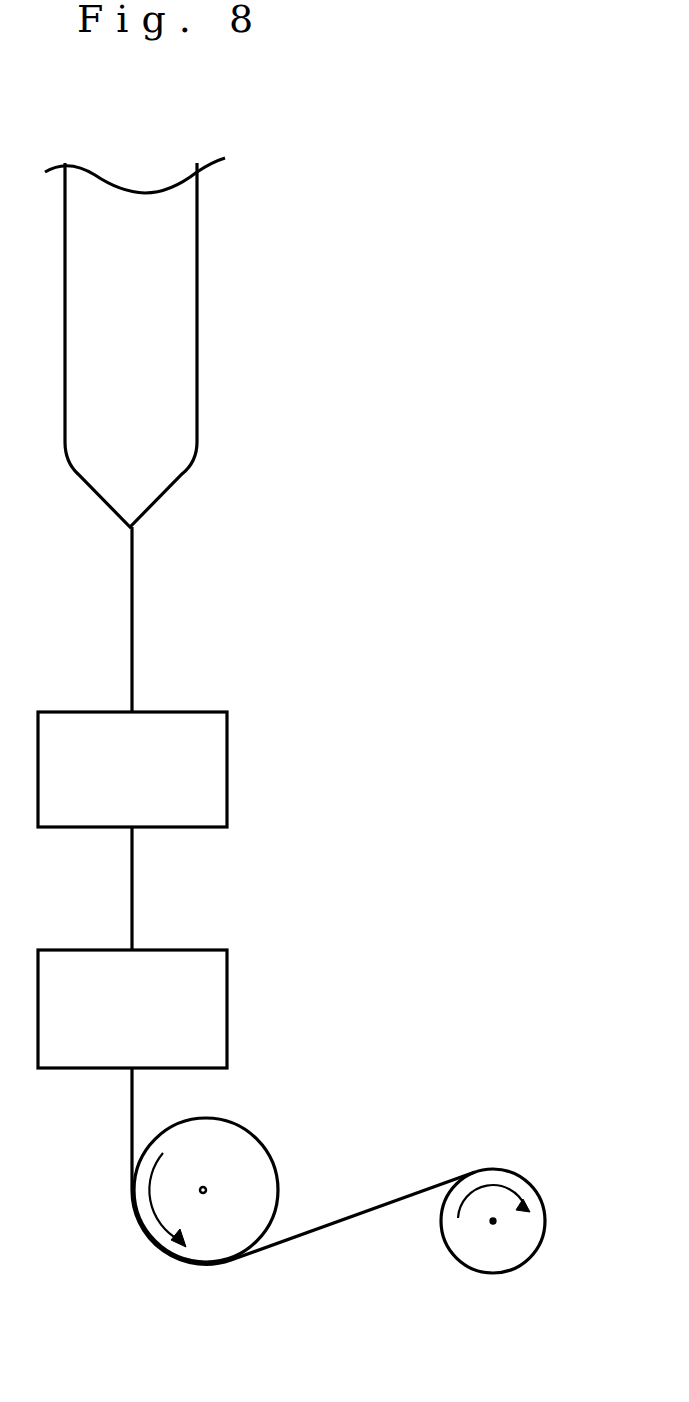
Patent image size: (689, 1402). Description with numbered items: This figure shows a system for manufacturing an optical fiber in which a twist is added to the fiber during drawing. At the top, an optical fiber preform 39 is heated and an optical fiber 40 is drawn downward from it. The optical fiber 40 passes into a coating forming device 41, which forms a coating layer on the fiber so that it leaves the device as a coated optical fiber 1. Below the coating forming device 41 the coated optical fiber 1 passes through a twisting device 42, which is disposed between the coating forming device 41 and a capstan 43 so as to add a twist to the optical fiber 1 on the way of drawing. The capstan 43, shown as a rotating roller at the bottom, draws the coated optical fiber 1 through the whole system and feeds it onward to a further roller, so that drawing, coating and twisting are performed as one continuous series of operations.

The coated optical fiber 1 is at (132, 890).
The optical fiber preform 39 is at (180, 317).
The optical fiber 40 is at (132, 640).
The coating forming device 41 is at (227, 777).
The twisting device 42 is at (227, 1023).
The capstan 43 is at (217, 1247).